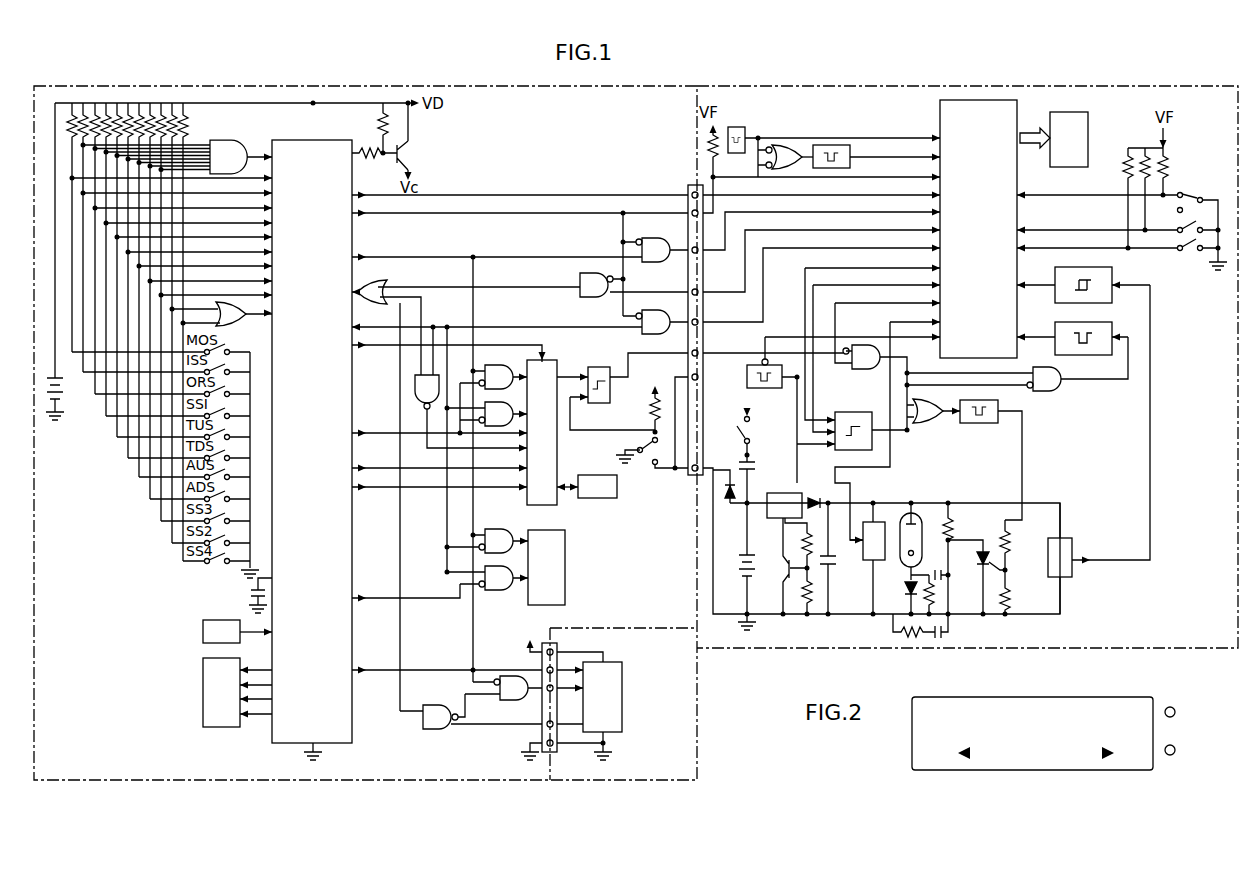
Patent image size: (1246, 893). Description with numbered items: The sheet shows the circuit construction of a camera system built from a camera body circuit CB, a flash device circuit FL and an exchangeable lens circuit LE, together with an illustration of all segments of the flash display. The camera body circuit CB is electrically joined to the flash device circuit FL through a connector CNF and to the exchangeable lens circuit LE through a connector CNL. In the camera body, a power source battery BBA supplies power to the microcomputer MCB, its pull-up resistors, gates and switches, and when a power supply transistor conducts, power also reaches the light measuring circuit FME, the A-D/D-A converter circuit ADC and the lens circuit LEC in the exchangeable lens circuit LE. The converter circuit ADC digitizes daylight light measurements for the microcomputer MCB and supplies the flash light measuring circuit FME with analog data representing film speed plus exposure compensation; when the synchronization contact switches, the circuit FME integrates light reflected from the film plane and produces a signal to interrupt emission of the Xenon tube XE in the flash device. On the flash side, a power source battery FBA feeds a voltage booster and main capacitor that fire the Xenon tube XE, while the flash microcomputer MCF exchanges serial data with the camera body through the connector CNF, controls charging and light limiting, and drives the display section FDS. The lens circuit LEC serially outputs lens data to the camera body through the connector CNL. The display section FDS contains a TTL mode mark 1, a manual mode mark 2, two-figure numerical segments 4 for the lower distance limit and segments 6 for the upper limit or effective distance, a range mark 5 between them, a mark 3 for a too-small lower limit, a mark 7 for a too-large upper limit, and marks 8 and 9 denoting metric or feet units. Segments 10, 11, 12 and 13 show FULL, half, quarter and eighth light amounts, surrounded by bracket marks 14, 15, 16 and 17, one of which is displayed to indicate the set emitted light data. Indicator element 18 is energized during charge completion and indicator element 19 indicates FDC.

In FIG. 2, the TTL mode mark 1 is at (912, 746).
In FIG. 2, the manual mode mark 2 is at (912, 764).
In FIG. 2, the lower limit mark 3 is at (970, 762).
In FIG. 2, the two-figure numerical segments 4 is at (1022, 776).
In FIG. 2, the range mark 5 is at (1042, 765).
In FIG. 2, the two-figure numerical segments 6 is at (1092, 776).
In FIG. 2, the upper limit mark 7 is at (1108, 762).
In FIG. 2, the metric mark 8 is at (1130, 750).
In FIG. 2, the feet mark 9 is at (1132, 770).
In FIG. 2, the FULL segment 10 is at (960, 707).
In FIG. 2, the half segment 11 is at (1016, 707).
In FIG. 2, the quarter segment 12 is at (1060, 707).
In FIG. 2, the eighth segment 13 is at (1108, 707).
In FIG. 2, the bracket mark 14 is at (986, 706).
In FIG. 2, the bracket mark 15 is at (1036, 706).
In FIG. 2, the bracket mark 16 is at (1082, 706).
In FIG. 2, the bracket mark 17 is at (1140, 706).
In FIG. 2, the indicator element 18 is at (1181, 713).
In FIG. 2, the indicator element 19 is at (1181, 751).
In FIG. 1, the camera body microcomputer MCB is at (350, 743).
In FIG. 1, the flash device microcomputer MCF is at (940, 108).
In FIG. 1, the camera body circuit CB is at (293, 782).
In FIG. 1, the flash device circuit FL is at (710, 650).
In FIG. 1, the exchangeable lens circuit LE is at (630, 782).
In FIG. 1, the A-D/D-A converter circuit ADC is at (550, 440).
In FIG. 1, the light measuring circuit for flash control FME is at (616, 373).
In FIG. 1, the Xenon tube XE is at (914, 513).
In FIG. 1, the flash connector CNF is at (712, 300).
In FIG. 1, the lens connector CNL is at (554, 647).
In FIG. 1, the lens circuit LEC is at (622, 686).
In FIG. 1, the display section FDS is at (1080, 120).
In FIG. 1, the power source battery BBA is at (76, 378).
In FIG. 1, the power source battery FBA is at (738, 568).